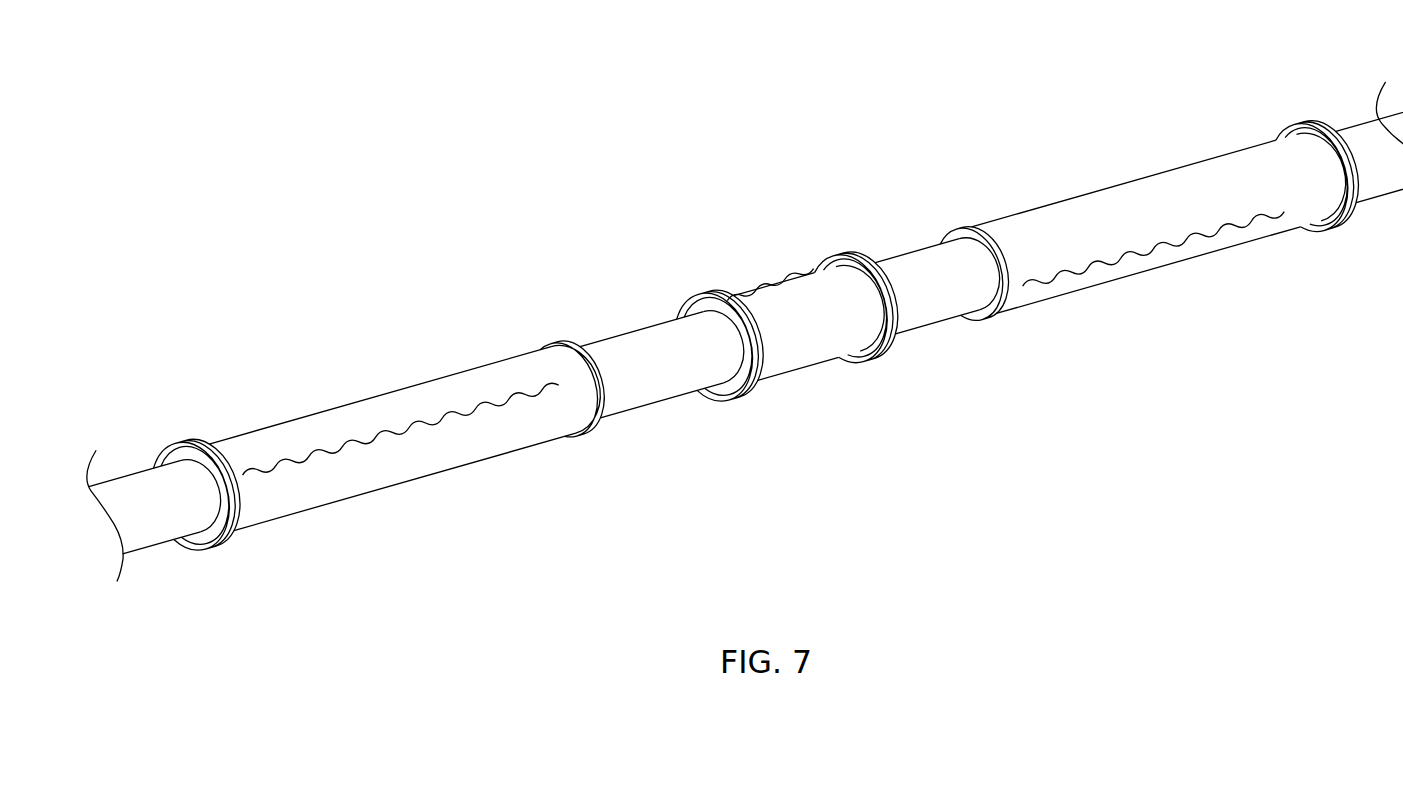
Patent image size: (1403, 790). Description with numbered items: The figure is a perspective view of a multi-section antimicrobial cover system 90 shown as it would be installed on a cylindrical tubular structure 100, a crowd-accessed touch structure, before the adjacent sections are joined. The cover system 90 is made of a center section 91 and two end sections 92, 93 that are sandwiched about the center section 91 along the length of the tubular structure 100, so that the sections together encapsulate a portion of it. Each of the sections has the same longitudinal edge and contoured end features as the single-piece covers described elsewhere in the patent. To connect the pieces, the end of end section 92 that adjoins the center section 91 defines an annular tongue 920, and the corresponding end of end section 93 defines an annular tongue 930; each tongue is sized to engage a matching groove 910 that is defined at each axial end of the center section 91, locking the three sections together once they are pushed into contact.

The multi-section cover system 90 is at (975, 141).
The center section 91 is at (782, 297).
The end section 92 is at (364, 425).
The end section 93 is at (1155, 201).
The tubular structure 100 is at (130, 487).
The groove 910 is at (710, 393).
The annular tongue 920 is at (595, 402).
The annular tongue 930 is at (993, 313).